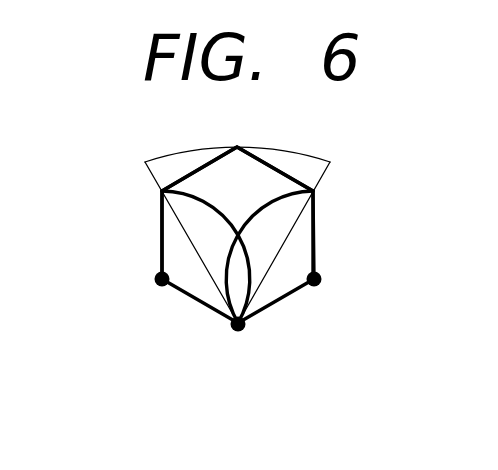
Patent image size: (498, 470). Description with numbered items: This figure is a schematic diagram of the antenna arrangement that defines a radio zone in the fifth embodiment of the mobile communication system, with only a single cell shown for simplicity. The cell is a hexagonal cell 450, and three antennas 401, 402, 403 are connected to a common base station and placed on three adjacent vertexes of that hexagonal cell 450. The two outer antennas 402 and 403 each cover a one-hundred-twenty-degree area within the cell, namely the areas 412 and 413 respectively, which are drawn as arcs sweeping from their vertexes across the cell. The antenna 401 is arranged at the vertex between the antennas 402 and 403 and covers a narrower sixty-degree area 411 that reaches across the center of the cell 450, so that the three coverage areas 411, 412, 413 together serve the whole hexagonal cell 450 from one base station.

The antenna 401 is at (238, 331).
The antenna 402 is at (156, 286).
The antenna 403 is at (320, 287).
The 60° area 411 is at (253, 170).
The 120° area 412 is at (160, 243).
The 120° area 413 is at (312, 242).
The hexagonal cell 450 is at (315, 208).